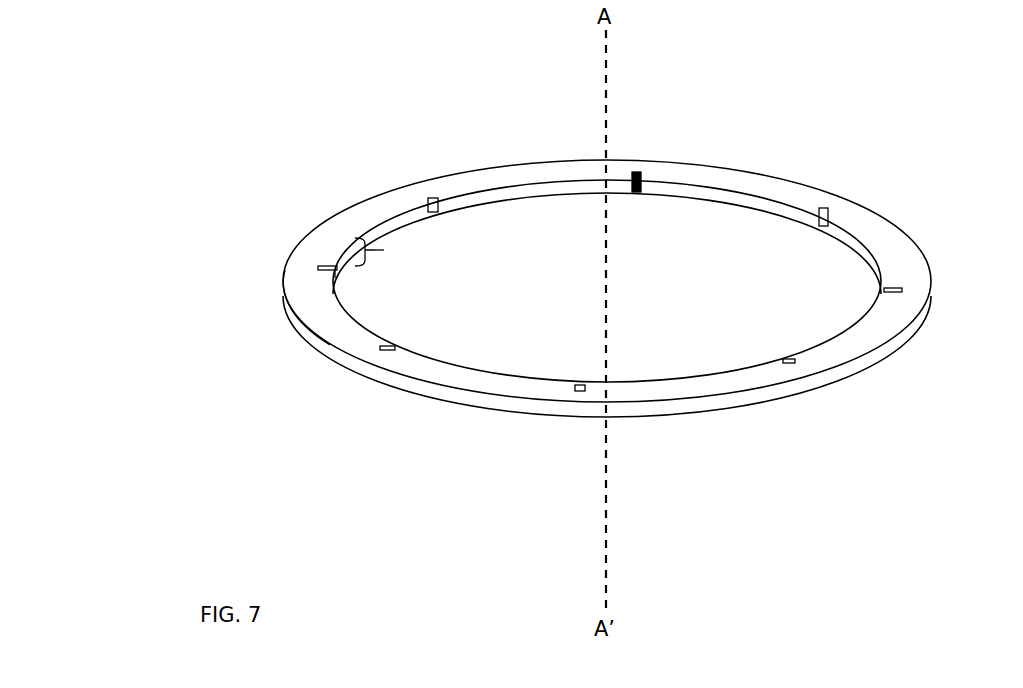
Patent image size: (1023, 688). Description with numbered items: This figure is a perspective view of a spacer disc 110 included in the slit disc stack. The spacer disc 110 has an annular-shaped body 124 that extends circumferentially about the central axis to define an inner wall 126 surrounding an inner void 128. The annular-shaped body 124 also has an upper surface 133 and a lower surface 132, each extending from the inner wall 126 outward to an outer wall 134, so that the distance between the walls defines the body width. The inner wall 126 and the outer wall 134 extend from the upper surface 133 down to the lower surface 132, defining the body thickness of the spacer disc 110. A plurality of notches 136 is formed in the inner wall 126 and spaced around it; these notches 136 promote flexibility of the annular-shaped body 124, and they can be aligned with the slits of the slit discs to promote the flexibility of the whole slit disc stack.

The spacer disc 110 is at (511, 102).
The annular-shaped body 124 is at (365, 212).
The inner wall 126 is at (746, 197).
The inner void 128 is at (677, 315).
The lower surface 132 is at (334, 358).
The upper surface 133 is at (313, 320).
The outer wall 134 is at (905, 345).
The notches 136 is at (322, 266).